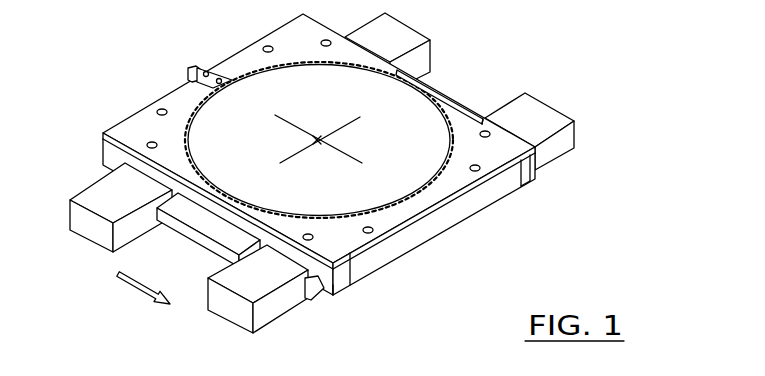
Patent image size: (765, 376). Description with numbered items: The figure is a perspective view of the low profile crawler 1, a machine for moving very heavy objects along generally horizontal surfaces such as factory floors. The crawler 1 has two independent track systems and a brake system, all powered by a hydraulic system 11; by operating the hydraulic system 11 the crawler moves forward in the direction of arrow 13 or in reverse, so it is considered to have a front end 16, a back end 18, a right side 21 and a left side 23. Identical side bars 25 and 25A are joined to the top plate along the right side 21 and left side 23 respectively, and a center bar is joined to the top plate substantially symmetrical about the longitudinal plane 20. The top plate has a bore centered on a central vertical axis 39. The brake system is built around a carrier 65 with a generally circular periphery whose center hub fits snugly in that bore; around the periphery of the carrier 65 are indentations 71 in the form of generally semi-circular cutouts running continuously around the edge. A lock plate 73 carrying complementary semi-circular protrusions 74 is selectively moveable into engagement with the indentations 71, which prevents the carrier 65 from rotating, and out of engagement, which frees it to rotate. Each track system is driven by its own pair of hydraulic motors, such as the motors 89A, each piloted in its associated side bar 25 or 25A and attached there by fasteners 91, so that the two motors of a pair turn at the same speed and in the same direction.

The low profile crawler 1 is at (350, 190).
The hydraulic system 11 is at (211, 327).
The arrow 13 is at (134, 296).
The front end 16 is at (491, 204).
The back end 18 is at (117, 126).
The longitudinal plane 20 is at (343, 150).
The right side 21 is at (334, 279).
The left side 23 is at (484, 100).
The side bar 25 is at (330, 305).
The side bar 25A is at (544, 186).
The central vertical axis 39 is at (316, 136).
The carrier 65 is at (258, 57).
The indentations 71 is at (468, 102).
The lock plate 73 is at (200, 56).
The semi-circular protrusions 74 is at (220, 85).
The hydraulic motors 89A is at (410, 32).
The fasteners 91 is at (306, 301).